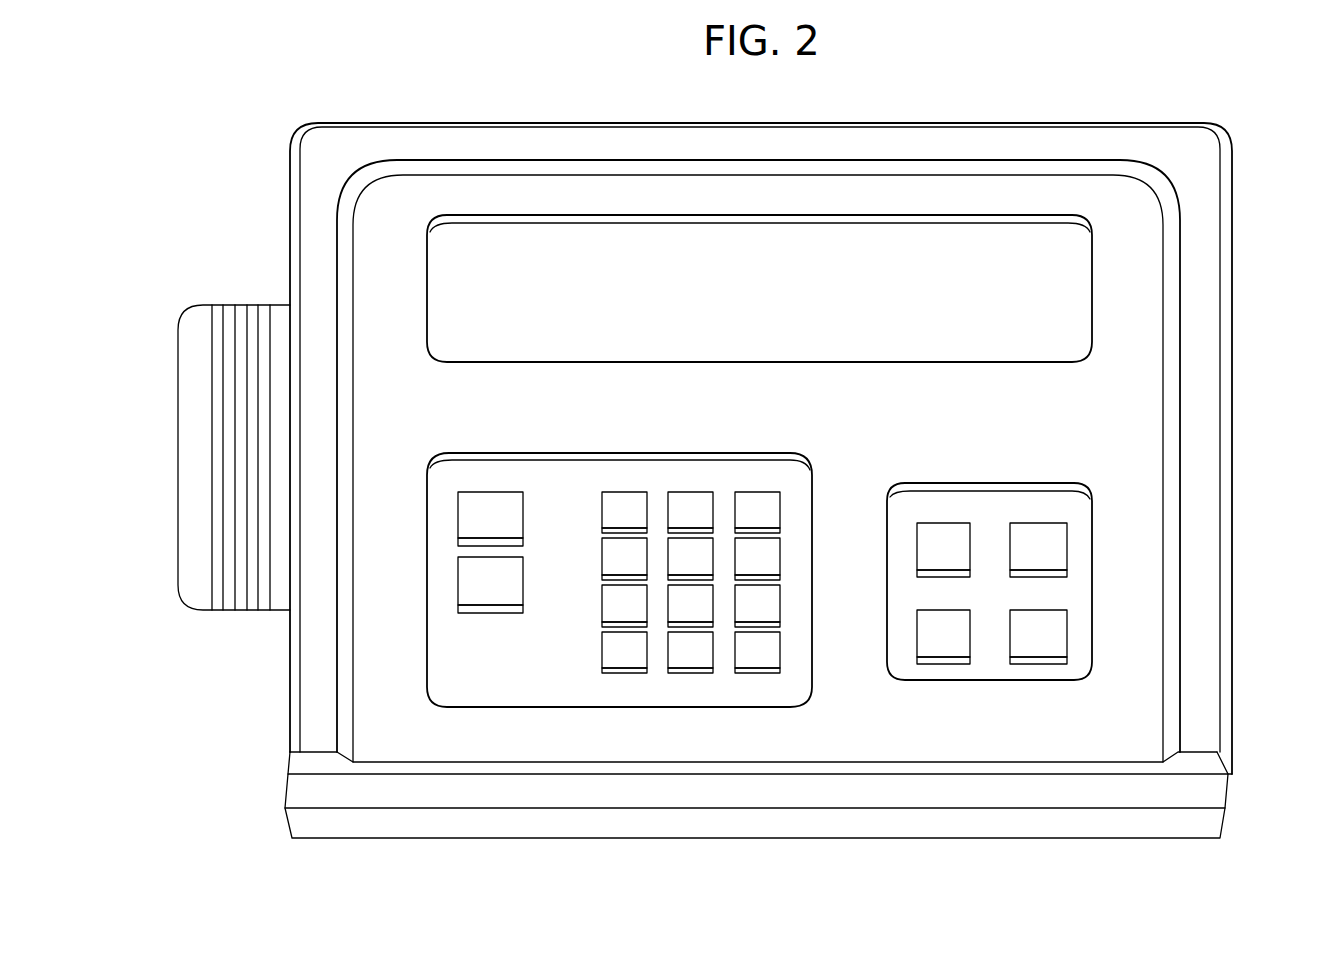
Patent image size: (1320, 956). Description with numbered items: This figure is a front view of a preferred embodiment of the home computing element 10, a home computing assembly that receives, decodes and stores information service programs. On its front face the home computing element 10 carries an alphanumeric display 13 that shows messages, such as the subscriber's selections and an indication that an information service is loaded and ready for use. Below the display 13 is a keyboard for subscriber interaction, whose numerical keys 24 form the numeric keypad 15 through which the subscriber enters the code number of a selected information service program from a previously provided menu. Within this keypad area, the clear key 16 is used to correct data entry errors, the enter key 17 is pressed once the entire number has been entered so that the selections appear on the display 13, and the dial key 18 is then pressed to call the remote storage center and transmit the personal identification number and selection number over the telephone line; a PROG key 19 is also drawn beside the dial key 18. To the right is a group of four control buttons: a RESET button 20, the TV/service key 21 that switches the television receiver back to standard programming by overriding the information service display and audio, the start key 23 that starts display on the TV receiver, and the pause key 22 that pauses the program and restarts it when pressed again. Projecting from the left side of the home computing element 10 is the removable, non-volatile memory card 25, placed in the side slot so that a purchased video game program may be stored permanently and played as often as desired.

The home computing element 10 is at (1232, 259).
The alphanumeric display 13 is at (1005, 362).
The numeric keypad 15 is at (688, 674).
The clear key 16 is at (602, 648).
The enter key 17 is at (757, 674).
The dial key 18 is at (458, 512).
The PROG key 19 is at (458, 578).
The RESET button 20 is at (917, 548).
The TV/service key 21 is at (1067, 545).
The pause key 22 is at (1037, 664).
The start key 23 is at (942, 664).
The numerical keys 24 is at (693, 453).
The removable non-volatile memory card 25 is at (178, 450).